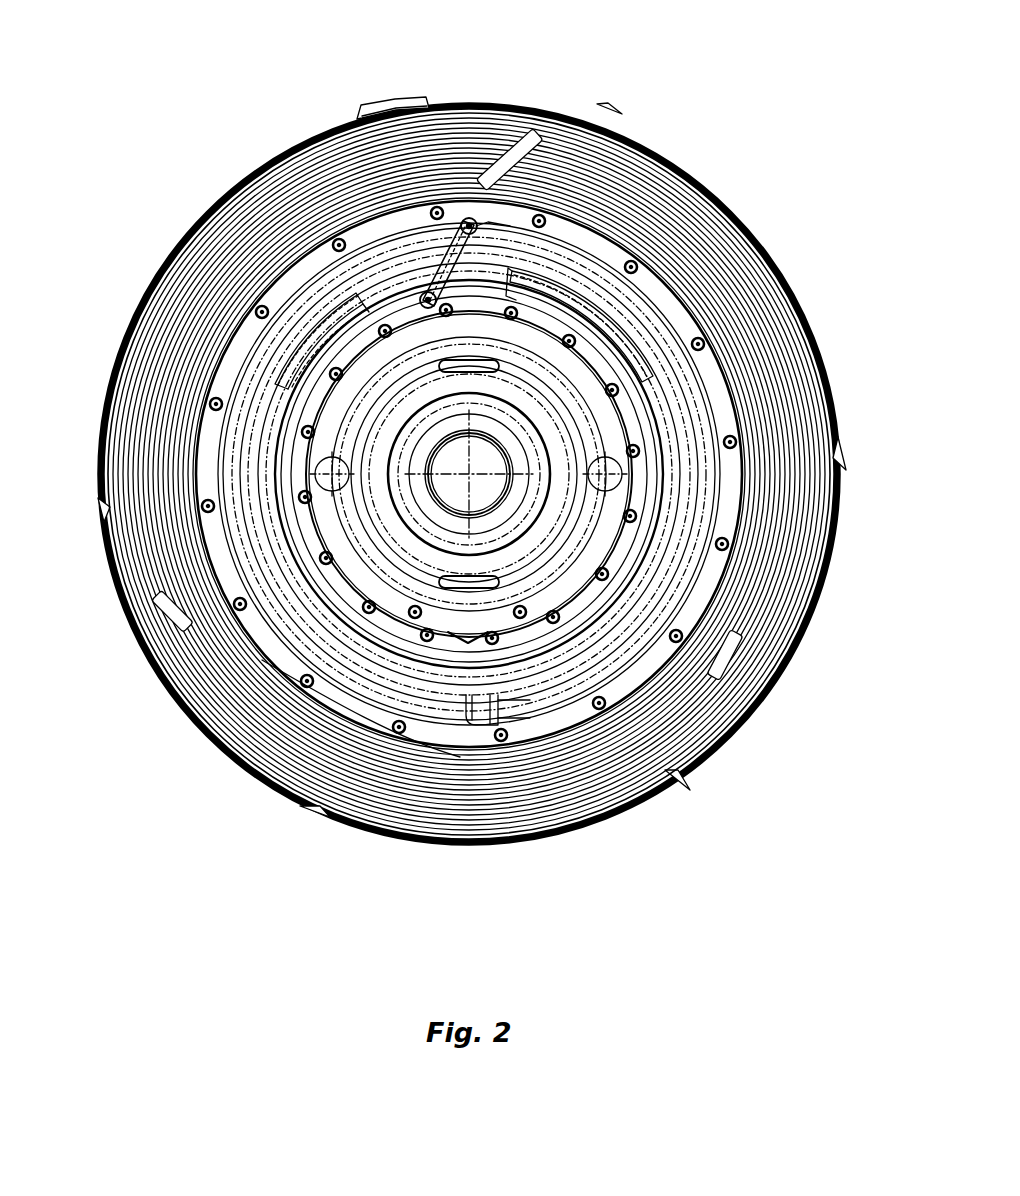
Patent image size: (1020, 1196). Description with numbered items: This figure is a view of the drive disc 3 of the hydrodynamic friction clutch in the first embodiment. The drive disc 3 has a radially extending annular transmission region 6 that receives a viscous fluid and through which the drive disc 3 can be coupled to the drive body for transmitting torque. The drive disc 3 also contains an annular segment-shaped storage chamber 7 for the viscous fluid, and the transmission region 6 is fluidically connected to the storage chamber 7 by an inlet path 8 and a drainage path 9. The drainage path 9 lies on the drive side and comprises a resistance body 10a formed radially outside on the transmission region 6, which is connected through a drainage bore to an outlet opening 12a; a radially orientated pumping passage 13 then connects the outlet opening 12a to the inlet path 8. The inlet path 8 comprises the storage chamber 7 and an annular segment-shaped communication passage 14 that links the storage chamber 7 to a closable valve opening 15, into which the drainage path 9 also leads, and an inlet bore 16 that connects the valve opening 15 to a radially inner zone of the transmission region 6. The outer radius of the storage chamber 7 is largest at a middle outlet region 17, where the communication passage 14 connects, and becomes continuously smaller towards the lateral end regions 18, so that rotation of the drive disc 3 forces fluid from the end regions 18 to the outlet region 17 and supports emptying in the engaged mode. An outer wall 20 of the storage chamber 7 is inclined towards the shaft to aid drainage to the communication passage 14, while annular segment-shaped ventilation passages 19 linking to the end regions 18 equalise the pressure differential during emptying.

The drive disc 3 is at (771, 94).
The transmission region 6 is at (742, 302).
The storage chamber 7 is at (366, 310).
The inlet path 8 is at (597, 209).
The drainage path 9 is at (272, 210).
The resistance body 10a is at (397, 108).
The outlet opening 12a is at (366, 306).
The pumping passage 13 is at (428, 298).
The communication passage 14 is at (577, 265).
The valve opening 15 is at (468, 224).
The inlet bore 16 is at (493, 171).
The outlet region 17 is at (457, 684).
The end regions 18 is at (340, 330).
The ventilation passages 19 is at (290, 448).
The outer wall 20 is at (345, 660).